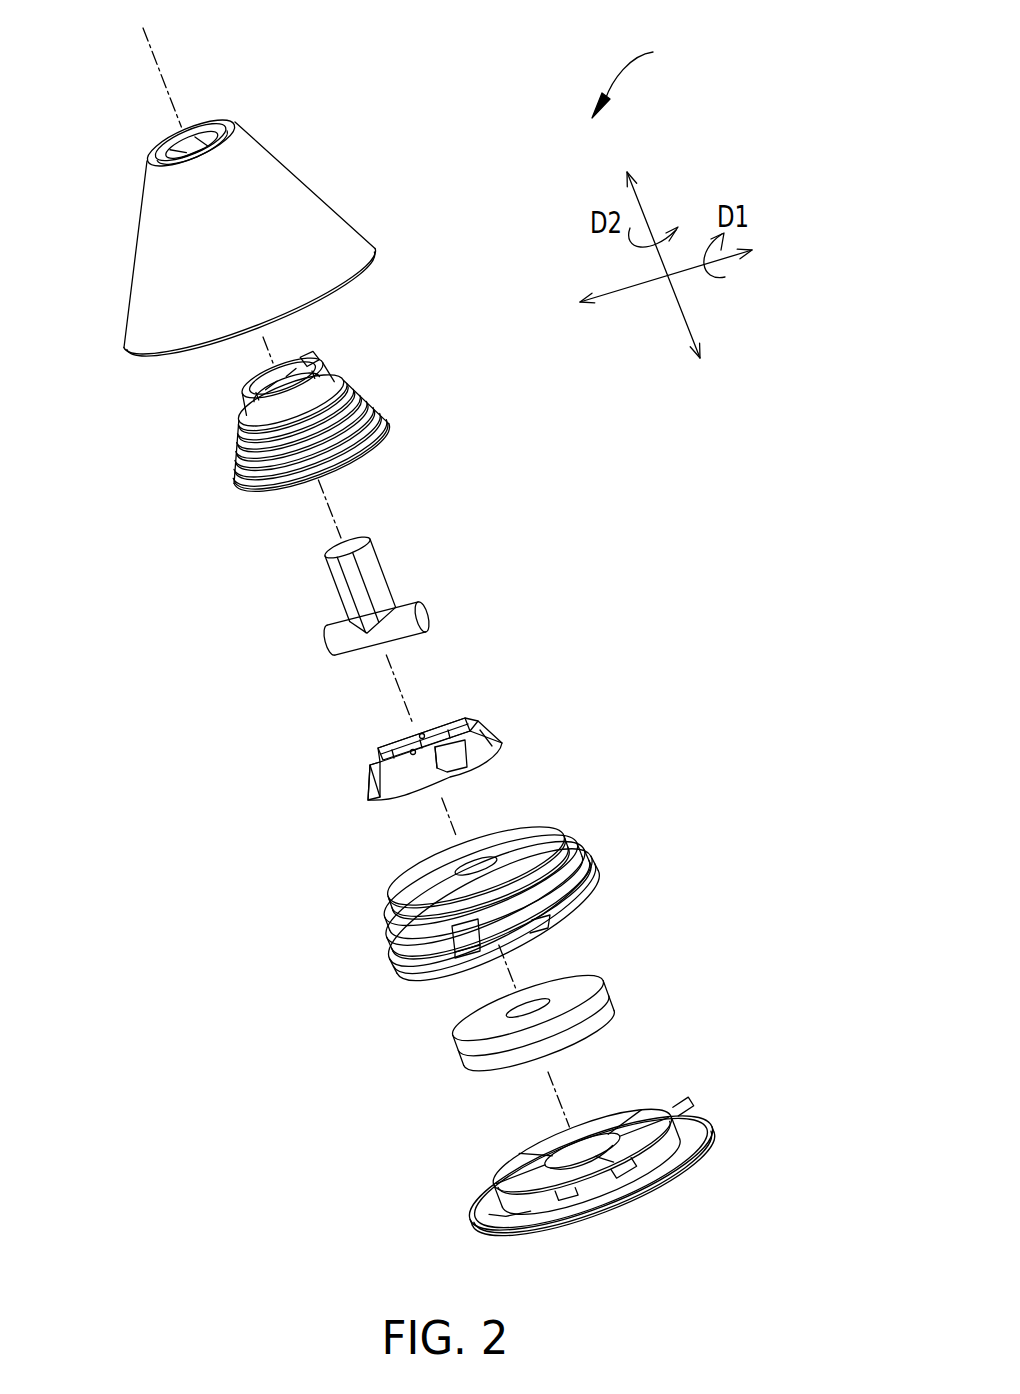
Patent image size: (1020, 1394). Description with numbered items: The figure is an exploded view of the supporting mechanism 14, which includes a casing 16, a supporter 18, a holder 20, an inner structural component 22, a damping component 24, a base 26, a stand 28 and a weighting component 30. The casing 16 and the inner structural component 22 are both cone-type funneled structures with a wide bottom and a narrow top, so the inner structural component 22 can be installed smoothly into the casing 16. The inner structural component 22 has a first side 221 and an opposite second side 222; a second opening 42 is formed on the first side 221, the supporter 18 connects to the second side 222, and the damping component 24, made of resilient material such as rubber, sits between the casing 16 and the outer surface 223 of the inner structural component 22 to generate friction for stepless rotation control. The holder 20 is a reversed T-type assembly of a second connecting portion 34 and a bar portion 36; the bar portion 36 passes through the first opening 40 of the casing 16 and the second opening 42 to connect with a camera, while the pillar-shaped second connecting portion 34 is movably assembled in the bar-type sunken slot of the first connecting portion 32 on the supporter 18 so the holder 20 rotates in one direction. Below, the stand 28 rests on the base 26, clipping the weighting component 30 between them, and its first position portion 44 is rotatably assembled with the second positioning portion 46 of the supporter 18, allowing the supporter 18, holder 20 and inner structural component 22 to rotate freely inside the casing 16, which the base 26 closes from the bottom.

The supporting mechanism 14 is at (638, 75).
The casing 16 is at (313, 213).
The supporter 18 is at (491, 744).
The holder 20 is at (468, 595).
The inner structural component 22 is at (383, 437).
The damping component 24 is at (368, 398).
The base 26 is at (709, 1133).
The stand 28 is at (560, 842).
The weighting component 30 is at (615, 1015).
The first connecting portion 32 is at (388, 750).
The second connecting portion 34 is at (427, 618).
The bar portion 36 is at (373, 573).
The first opening 40 is at (199, 135).
The second opening 42 is at (272, 378).
The first position portion 44 is at (460, 862).
The second positioning portion 46 is at (447, 783).
The first side 221 is at (307, 358).
The second side 222 is at (347, 460).
The outer surface 223 is at (327, 378).